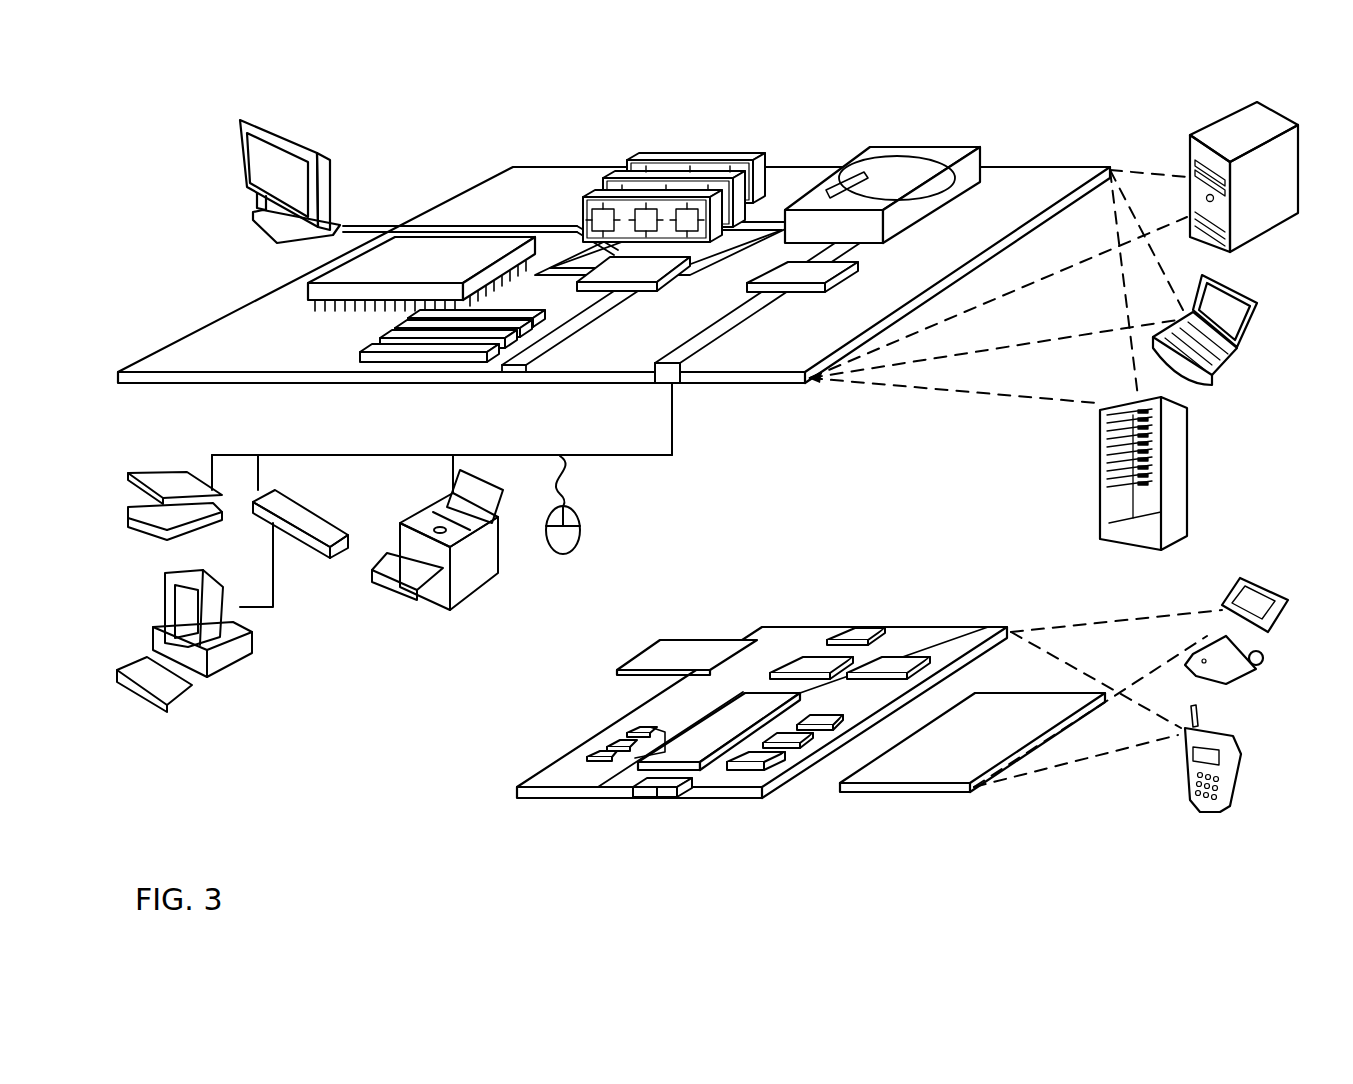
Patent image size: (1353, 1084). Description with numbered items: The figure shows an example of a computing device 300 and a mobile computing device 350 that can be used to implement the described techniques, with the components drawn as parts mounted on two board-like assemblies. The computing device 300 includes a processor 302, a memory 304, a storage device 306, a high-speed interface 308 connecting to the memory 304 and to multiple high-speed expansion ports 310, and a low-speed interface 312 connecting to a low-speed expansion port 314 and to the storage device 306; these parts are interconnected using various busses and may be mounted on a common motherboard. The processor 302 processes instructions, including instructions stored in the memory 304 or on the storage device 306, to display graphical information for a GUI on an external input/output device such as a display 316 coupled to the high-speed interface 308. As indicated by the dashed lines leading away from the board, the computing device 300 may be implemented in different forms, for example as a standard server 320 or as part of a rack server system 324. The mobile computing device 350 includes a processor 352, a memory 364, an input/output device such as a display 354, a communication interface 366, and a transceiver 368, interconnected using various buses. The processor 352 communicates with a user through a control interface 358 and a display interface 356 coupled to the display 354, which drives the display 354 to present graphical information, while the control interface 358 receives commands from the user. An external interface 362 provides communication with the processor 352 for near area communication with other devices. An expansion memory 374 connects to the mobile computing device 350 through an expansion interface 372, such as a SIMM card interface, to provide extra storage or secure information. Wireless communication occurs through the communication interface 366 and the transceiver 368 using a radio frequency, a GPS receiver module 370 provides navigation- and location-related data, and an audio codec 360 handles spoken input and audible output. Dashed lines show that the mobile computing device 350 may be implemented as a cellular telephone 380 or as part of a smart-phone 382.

The computing device 300 is at (434, 140).
The processor 302 is at (318, 289).
The memory 304 is at (642, 163).
The storage device 306 is at (868, 149).
The high-speed interface 308 is at (602, 268).
The high-speed expansion ports 310 is at (387, 346).
The low-speed interface 312 is at (785, 274).
The low-speed expansion port 314 is at (708, 381).
The display 316 is at (247, 119).
The standard server 320 is at (1191, 155).
The rack server system 324 is at (1100, 501).
The mobile computing device 350 is at (486, 800).
The processor 352 is at (697, 756).
The display 354 is at (930, 773).
The display interface 356 is at (757, 760).
The control interface 358 is at (793, 740).
The audio codec 360 is at (822, 722).
The external interface 362 is at (657, 797).
The memory 364 is at (608, 746).
The communication interface 366 is at (814, 665).
The transceiver 368 is at (889, 665).
The GPS receiver module 370 is at (864, 630).
The expansion interface 372 is at (721, 690).
The expansion memory 374 is at (740, 639).
The cellular telephone 380 is at (1226, 601).
The smart-phone 382 is at (1185, 766).